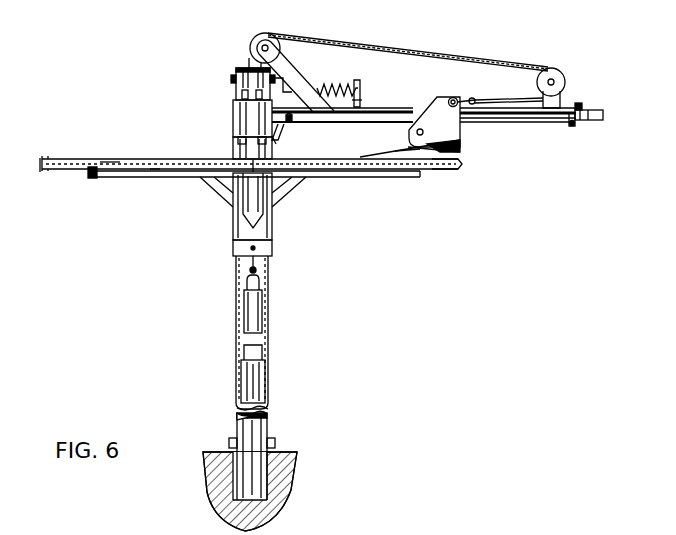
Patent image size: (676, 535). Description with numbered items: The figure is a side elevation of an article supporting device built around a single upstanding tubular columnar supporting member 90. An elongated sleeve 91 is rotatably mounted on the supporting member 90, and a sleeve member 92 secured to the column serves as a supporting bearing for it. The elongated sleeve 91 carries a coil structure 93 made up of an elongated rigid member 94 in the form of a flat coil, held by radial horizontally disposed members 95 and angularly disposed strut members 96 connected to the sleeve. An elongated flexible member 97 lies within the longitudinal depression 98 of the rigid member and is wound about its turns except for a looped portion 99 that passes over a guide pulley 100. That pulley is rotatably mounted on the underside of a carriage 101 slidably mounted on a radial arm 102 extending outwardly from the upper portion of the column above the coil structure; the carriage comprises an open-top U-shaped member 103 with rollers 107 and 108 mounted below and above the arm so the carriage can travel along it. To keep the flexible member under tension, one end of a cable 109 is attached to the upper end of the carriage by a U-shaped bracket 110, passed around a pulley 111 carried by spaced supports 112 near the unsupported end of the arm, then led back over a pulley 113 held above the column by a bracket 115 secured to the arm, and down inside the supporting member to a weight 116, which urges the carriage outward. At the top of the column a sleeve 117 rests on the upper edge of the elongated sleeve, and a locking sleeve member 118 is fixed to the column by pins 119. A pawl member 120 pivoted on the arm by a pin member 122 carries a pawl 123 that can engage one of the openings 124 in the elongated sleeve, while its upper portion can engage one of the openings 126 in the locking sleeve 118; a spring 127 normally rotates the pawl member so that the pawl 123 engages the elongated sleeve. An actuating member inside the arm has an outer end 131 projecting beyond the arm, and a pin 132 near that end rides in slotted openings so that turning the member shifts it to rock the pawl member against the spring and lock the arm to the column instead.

The columnar supporting member 90 is at (268, 385).
The elongated sleeve 91 is at (233, 231).
The sleeve member 92 is at (273, 247).
The coil structure 93 is at (113, 143).
The elongated rigid member 94 is at (58, 159).
The radial horizontally disposed members 95 is at (116, 178).
The angularly disposed strut members 96 is at (211, 195).
The elongated flexible member 97 is at (160, 158).
The longitudinal depression 98 is at (42, 166).
The looped portion 99 is at (405, 153).
The guide pulley 100 is at (466, 161).
The carriage 101 is at (468, 135).
The radial arm 102 is at (573, 124).
The open-top U-shaped member 103 is at (437, 106).
The roller 107 is at (416, 132).
The roller 108 is at (455, 98).
The cable 109 is at (538, 61).
The U-shaped bracket 110 is at (470, 100).
The pulley 111 is at (563, 70).
The spaced supports 112 is at (557, 99).
The pulley 113 is at (271, 35).
The bracket 115 is at (291, 71).
The weight 116 is at (263, 300).
The sleeve 117 is at (233, 123).
The locking sleeve member 118 is at (236, 85).
The pins 119 is at (232, 77).
The pawl member 120 is at (286, 138).
The pin member 122 is at (293, 119).
The pawl 123 is at (275, 142).
The openings 124 is at (238, 142).
The openings 126 is at (242, 95).
The spring 127 is at (345, 85).
The end of actuating member 131 is at (633, 105).
The pin 132 is at (580, 106).